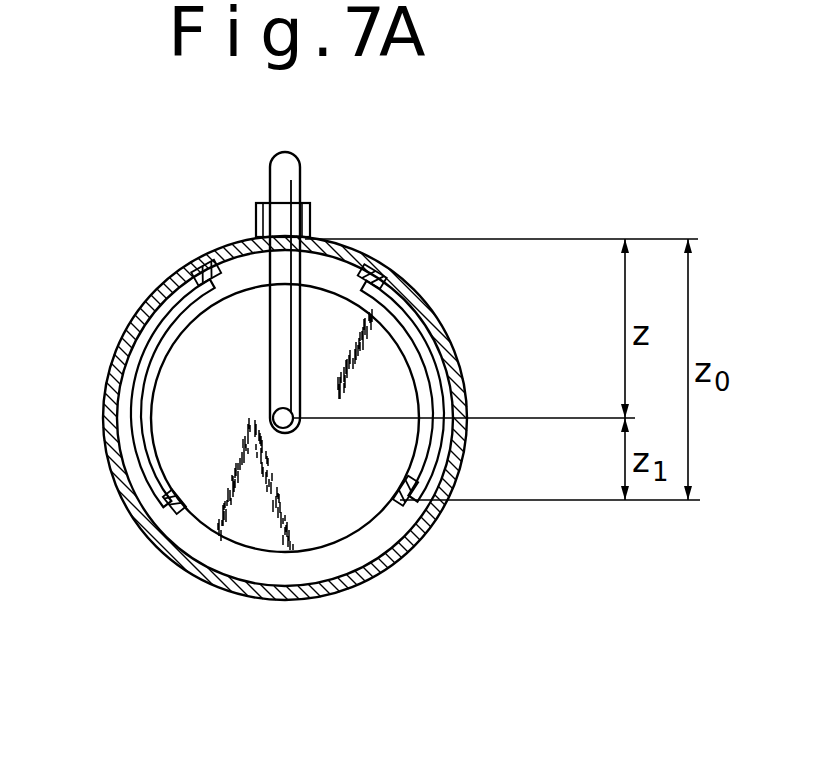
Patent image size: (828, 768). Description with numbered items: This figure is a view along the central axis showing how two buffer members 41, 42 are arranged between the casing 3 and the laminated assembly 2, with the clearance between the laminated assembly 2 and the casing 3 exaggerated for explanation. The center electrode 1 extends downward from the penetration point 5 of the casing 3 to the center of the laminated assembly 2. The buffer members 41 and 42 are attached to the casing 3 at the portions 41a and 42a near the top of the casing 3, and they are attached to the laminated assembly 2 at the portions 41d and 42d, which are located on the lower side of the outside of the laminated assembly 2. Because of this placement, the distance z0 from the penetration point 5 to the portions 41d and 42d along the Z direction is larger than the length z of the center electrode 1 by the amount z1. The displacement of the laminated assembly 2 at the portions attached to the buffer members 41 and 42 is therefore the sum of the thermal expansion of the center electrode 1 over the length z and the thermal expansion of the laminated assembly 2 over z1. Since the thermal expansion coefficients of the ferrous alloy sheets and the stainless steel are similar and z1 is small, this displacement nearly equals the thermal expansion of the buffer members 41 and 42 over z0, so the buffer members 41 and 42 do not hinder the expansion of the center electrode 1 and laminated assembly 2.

The center electrode 1 is at (298, 165).
The laminated assembly 2 is at (237, 543).
The casing 3 is at (108, 457).
The penetration point 5 is at (310, 220).
The buffer member 41 is at (443, 342).
The buffer member 42 is at (140, 343).
The portion attached to the casing 41a is at (390, 262).
The portion attached to the casing 42a is at (195, 267).
The portion attached to the laminated assembly 41d is at (413, 507).
The portion attached to the laminated assembly 42d is at (165, 514).